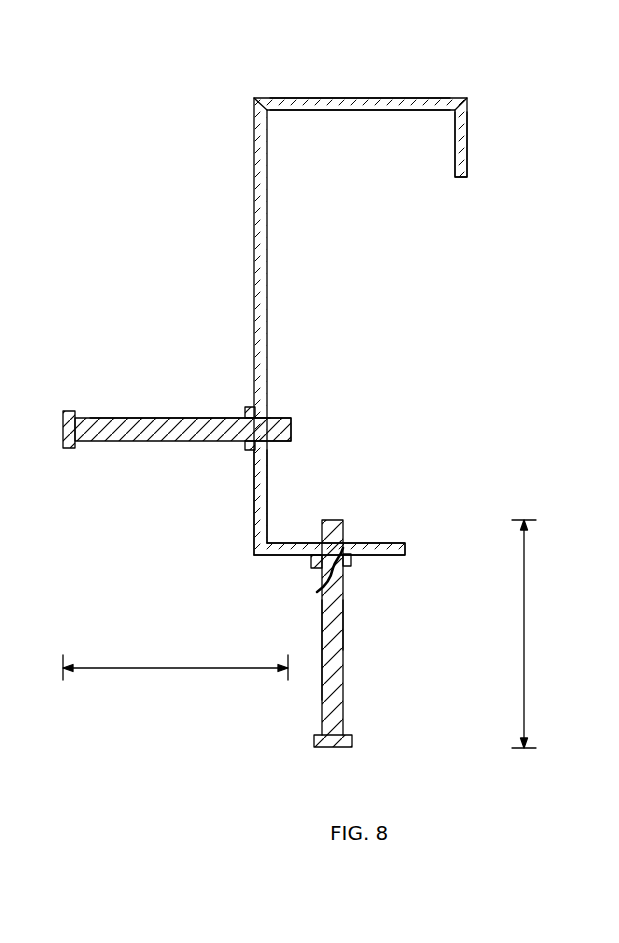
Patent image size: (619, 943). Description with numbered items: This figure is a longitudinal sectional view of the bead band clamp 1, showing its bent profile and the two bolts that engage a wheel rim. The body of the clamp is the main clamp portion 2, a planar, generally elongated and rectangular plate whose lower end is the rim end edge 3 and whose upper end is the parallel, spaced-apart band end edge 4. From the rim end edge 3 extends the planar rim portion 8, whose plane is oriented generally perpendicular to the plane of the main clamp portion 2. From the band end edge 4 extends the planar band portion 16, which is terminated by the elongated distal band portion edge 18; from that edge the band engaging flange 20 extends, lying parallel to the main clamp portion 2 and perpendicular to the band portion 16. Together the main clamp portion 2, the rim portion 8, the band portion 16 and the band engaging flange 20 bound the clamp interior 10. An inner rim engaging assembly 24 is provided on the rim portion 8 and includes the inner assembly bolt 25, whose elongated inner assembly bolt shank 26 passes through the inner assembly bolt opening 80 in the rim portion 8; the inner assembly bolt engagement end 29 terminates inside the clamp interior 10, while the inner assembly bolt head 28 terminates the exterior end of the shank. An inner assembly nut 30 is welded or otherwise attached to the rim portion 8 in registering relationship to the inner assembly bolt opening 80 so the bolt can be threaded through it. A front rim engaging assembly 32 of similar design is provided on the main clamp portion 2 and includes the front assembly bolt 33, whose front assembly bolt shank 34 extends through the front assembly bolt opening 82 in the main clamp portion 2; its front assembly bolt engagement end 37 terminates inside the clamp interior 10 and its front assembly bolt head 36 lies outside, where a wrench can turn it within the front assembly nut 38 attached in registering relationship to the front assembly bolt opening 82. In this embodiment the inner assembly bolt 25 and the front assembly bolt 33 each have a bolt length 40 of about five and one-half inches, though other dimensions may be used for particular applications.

The bead band clamp 1 is at (222, 97).
The main clamp portion 2 is at (242, 193).
The rim end edge 3 is at (253, 554).
The band end edge 4 is at (253, 97).
The rim portion 8 is at (277, 566).
The clamp interior 10 is at (366, 273).
The band portion 16 is at (352, 99).
The distal band portion edge 18 is at (468, 100).
The band engaging flange 20 is at (468, 137).
The inner rim engaging assembly 24 is at (428, 592).
The inner assembly bolt 25 is at (345, 624).
The inner assembly bolt shank 26 is at (345, 650).
The inner assembly bolt head 28 is at (352, 742).
The inner assembly bolt engagement end 29 is at (333, 519).
The inner assembly nut 30 is at (355, 565).
The front rim engaging assembly 32 is at (146, 374).
The front assembly bolt 33 is at (178, 410).
The front assembly bolt shank 34 is at (150, 442).
The front assembly bolt head 36 is at (70, 412).
The front assembly bolt engagement end 37 is at (292, 425).
The front assembly nut 38 is at (248, 407).
The bolt length 40 is at (176, 664).
The inner assembly bolt opening 80 is at (326, 582).
The front assembly bolt opening 82 is at (281, 415).